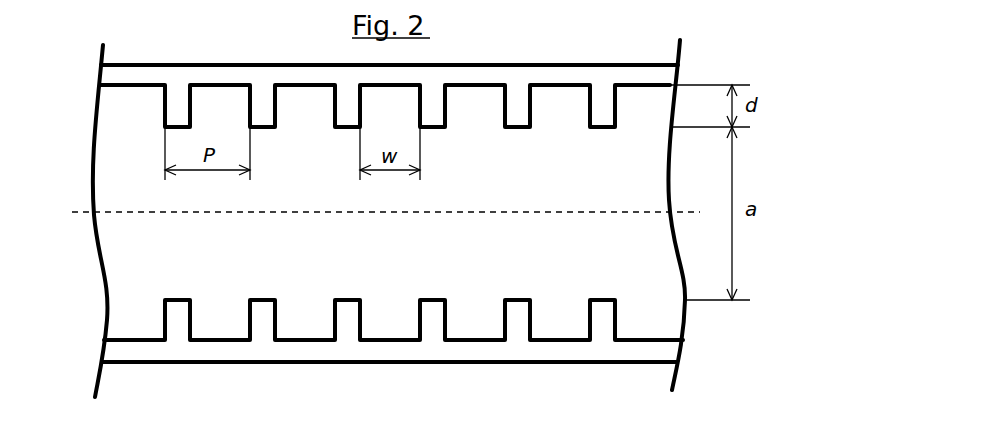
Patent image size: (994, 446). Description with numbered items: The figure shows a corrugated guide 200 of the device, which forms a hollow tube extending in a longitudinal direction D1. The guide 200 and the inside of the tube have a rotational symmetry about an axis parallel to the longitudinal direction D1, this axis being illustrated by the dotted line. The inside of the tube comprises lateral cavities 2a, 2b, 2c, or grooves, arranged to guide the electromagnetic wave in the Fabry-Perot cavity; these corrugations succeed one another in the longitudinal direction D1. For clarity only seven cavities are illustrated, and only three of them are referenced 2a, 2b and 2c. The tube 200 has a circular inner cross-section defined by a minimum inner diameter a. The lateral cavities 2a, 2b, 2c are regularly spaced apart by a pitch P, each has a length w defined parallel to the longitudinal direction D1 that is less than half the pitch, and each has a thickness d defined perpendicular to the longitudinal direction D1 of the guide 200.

The guide 200 is at (382, 362).
The lateral cavity 2a is at (220, 313).
The lateral cavity 2b is at (303, 313).
The lateral cavity 2c is at (388, 313).
The longitudinal direction D1 is at (80, 213).